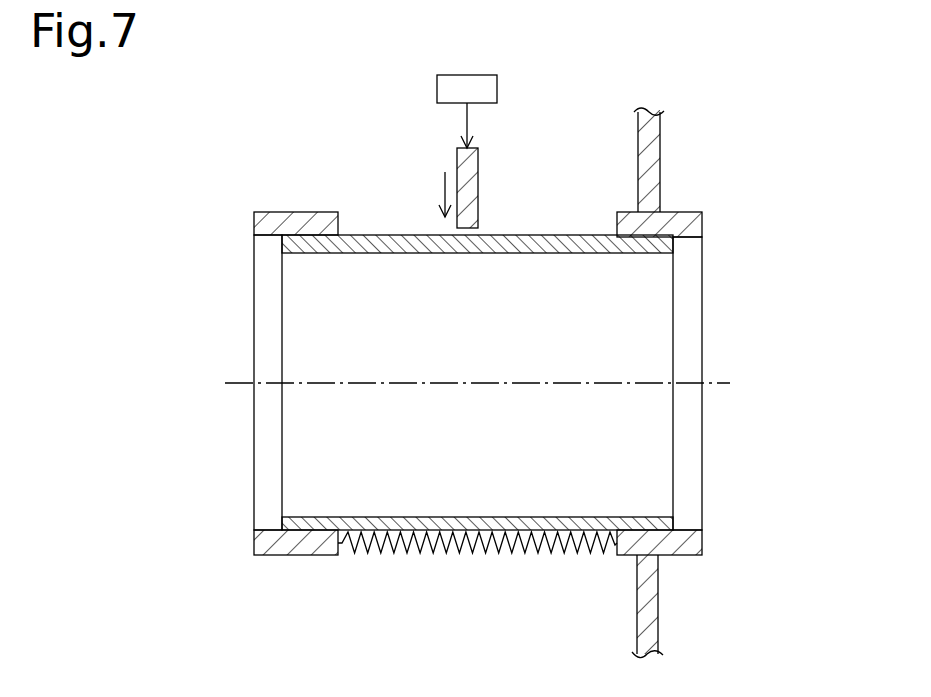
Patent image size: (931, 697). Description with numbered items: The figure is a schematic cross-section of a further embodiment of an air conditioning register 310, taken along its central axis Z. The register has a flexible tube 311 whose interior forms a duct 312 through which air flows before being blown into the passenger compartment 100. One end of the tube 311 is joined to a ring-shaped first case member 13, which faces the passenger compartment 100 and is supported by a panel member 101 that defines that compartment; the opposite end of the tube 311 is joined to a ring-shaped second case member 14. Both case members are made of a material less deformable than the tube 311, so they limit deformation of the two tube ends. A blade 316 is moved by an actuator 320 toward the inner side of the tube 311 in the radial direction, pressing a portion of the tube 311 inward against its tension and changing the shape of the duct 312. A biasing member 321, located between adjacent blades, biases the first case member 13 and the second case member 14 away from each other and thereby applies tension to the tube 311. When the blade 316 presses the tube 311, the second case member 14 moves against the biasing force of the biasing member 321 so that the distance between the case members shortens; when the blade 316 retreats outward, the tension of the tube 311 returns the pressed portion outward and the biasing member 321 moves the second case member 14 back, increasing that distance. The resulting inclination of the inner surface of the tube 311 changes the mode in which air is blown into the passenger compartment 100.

The air conditioning register 310 is at (202, 187).
The tube 311 is at (377, 233).
The duct 312 is at (477, 391).
The second case member 14 is at (255, 223).
The first case member 13 is at (697, 225).
The panel member 101 is at (657, 130).
The passenger compartment 100 is at (836, 290).
The actuator 320 is at (497, 90).
The blade 316 is at (479, 178).
The biasing member 321 is at (460, 552).
The axis Z is at (715, 380).